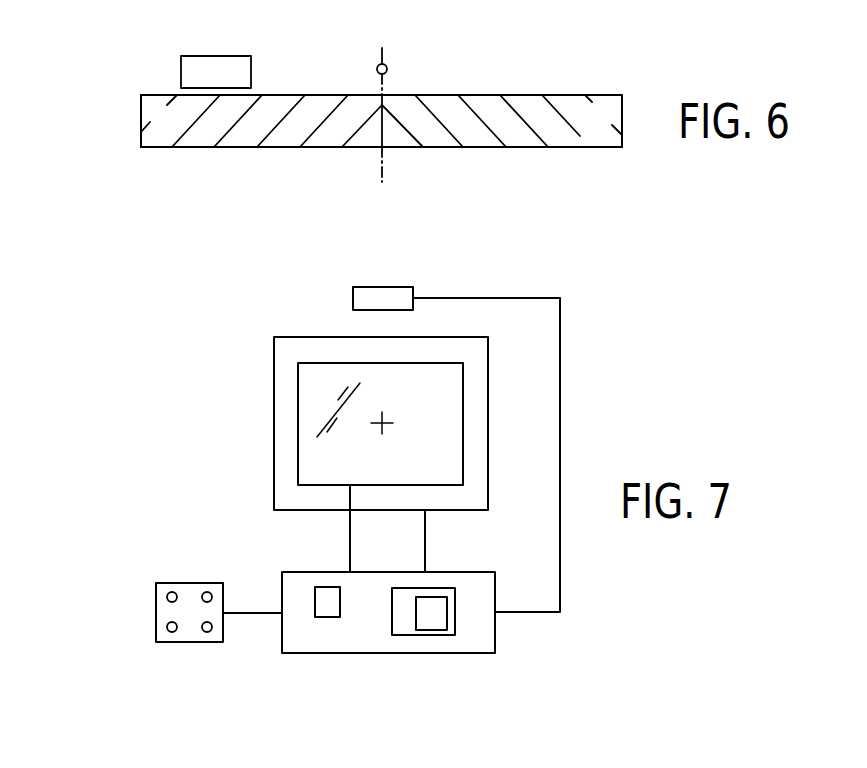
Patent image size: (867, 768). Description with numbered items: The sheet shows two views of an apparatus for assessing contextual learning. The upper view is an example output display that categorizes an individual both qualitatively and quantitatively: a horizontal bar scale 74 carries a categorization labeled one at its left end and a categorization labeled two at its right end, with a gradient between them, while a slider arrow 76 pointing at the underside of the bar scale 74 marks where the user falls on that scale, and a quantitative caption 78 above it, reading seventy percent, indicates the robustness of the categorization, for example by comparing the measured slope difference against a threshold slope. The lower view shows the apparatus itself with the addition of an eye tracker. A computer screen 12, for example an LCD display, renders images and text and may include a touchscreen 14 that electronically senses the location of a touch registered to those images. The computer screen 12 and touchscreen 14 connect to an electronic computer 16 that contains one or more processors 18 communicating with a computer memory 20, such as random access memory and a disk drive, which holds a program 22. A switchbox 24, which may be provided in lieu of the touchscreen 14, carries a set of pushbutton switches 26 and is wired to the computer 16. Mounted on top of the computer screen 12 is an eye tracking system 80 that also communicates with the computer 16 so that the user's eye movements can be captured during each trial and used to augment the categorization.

In FIG. 6, the computer screen 12 is at (118, 47).
In FIG. 7, the computer screen 12 is at (274, 378).
In FIG. 7, the touchscreen 14 is at (317, 407).
In FIG. 7, the electronic computer 16 is at (497, 637).
In FIG. 7, the processor 18 is at (327, 600).
In FIG. 7, the computer memory 20 is at (392, 610).
In FIG. 7, the program 22 is at (430, 608).
In FIG. 7, the switchbox 24 is at (156, 613).
In FIG. 7, the pushbutton switches 26 is at (207, 591).
In FIG. 6, the bar scale 74 is at (141, 112).
In FIG. 6, the slider arrow 76 is at (192, 151).
In FIG. 6, the quantitative caption 78 is at (216, 55).
In FIG. 7, the eye tracking system 80 is at (383, 286).